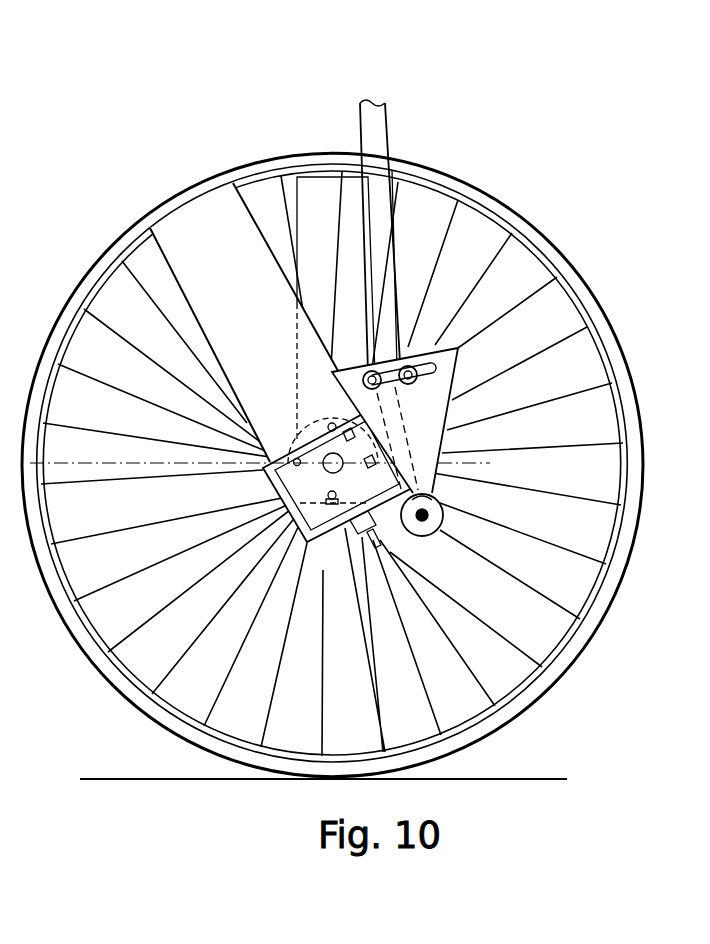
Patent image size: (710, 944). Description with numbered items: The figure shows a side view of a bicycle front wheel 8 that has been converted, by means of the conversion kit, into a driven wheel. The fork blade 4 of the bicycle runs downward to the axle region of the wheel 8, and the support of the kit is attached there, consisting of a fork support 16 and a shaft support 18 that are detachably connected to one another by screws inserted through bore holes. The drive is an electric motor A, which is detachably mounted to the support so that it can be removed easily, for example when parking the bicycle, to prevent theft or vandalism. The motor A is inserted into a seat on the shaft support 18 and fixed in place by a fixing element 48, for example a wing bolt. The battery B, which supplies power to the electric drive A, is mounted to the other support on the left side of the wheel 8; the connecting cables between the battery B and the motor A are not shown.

The fork blade 4 is at (373, 128).
The wheel 8 is at (595, 652).
The fork support 16 is at (495, 378).
The shaft support 18 is at (283, 502).
The fixing element 48 is at (527, 673).
The electric motor A is at (225, 257).
The battery B is at (320, 212).